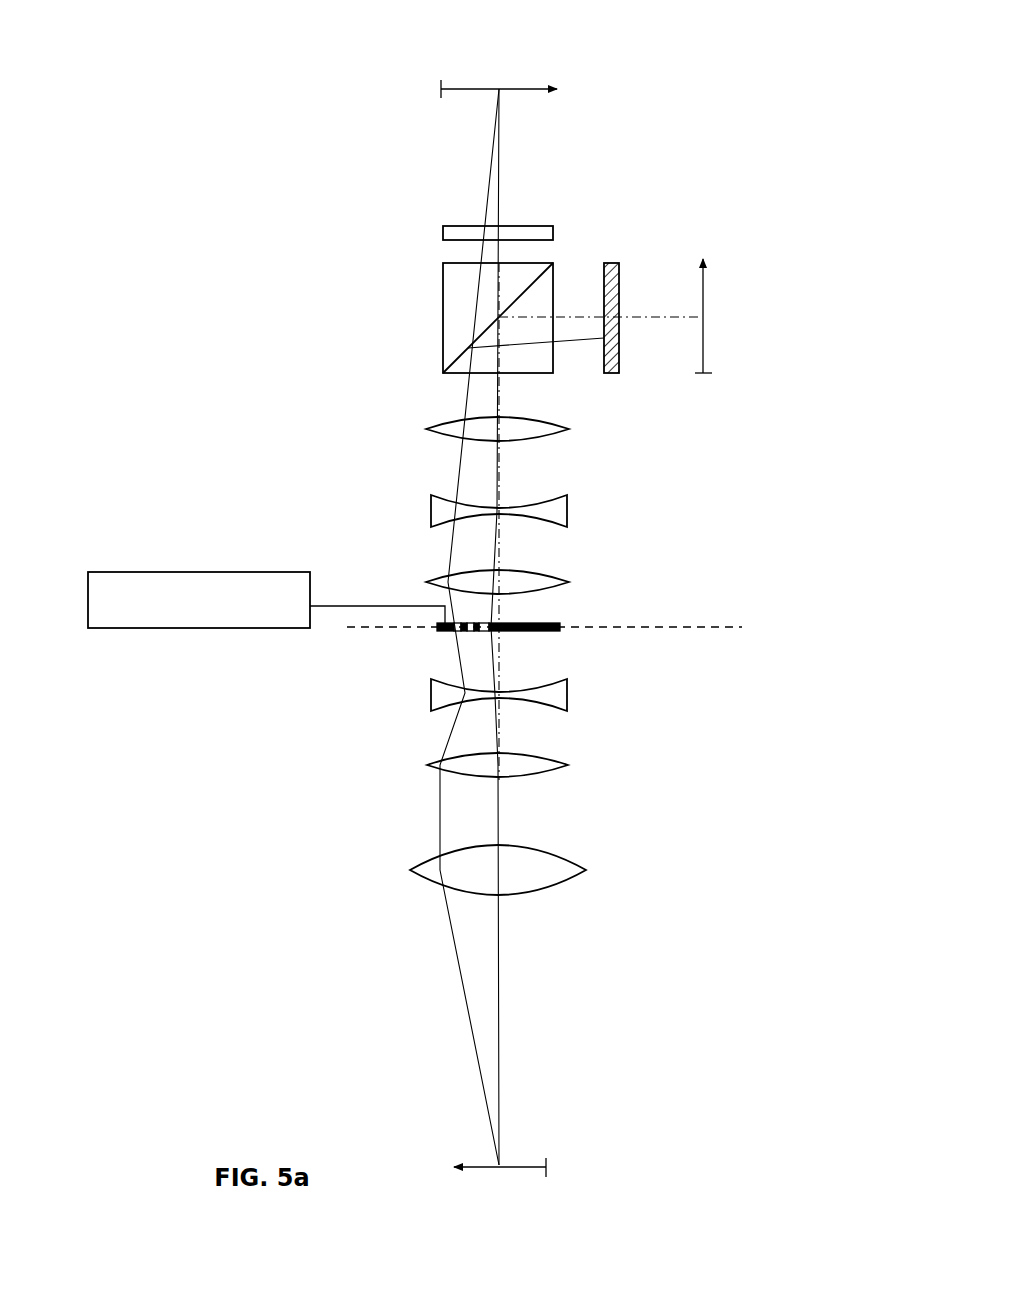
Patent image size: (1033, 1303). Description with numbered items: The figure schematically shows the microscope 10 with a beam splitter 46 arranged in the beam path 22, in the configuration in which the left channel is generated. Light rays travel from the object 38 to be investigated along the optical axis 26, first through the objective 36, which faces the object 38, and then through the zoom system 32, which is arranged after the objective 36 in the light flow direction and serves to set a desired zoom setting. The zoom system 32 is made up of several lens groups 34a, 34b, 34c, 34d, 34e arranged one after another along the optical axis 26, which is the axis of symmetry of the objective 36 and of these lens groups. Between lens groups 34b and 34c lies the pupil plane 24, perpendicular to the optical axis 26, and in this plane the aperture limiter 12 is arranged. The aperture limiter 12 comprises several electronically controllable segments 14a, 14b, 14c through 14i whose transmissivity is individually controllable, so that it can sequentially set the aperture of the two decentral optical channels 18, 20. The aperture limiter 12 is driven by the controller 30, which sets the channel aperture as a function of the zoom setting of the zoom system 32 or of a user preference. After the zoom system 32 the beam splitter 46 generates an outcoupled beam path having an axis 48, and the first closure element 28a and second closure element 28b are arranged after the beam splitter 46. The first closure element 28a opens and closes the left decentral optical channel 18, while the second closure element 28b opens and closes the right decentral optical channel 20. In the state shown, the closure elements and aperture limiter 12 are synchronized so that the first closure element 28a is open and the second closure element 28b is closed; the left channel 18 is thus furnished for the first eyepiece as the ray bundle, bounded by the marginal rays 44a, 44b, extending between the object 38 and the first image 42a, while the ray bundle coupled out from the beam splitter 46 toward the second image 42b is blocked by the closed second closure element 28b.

The microscope 10 is at (231, 77).
The aperture limiter 12 is at (548, 648).
The electronically controllable segment 14a is at (555, 620).
The electronically controllable segment 14b is at (545, 633).
The electronically controllable segment 14c is at (548, 634).
The electronically controllable segment 14i is at (440, 640).
The decentral optical channel 18 is at (438, 598).
The decentral optical channel 20 is at (557, 600).
The beam path 22 is at (582, 985).
The pupil plane 24 is at (722, 627).
The optical axis 26 is at (499, 1085).
The first closure element 28a is at (443, 231).
The second closure element 28b is at (619, 283).
The controller 30 is at (252, 628).
The zoom system 32 is at (333, 428).
The lens group 34a is at (568, 765).
The lens group 34b is at (565, 712).
The lens group 34c is at (569, 582).
The lens group 34d is at (567, 495).
The lens group 34e is at (569, 429).
The objective 36 is at (586, 870).
The object to be investigated 38 is at (450, 1165).
The first image 42a is at (470, 89).
The second image 42b is at (703, 338).
The marginal ray 44a is at (484, 213).
The marginal ray 44b is at (490, 168).
The beam splitter 46 is at (443, 310).
The axis 48 is at (655, 318).